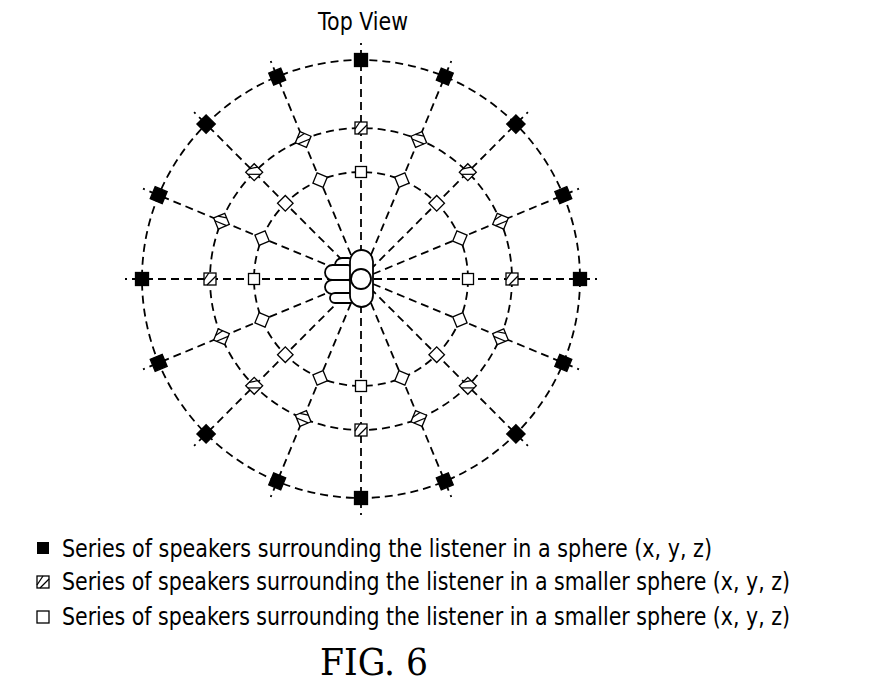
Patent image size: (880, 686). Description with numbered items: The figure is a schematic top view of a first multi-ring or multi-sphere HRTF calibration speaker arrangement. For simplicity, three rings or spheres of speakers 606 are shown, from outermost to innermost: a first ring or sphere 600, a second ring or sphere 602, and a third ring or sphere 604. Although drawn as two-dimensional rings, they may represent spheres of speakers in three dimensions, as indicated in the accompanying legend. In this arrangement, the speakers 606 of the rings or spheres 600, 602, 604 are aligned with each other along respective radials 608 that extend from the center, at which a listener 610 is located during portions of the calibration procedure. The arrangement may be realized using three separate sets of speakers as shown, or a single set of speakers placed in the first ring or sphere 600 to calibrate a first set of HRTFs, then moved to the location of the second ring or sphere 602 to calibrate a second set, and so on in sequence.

The first ring or sphere 600 is at (545, 158).
The second ring or sphere 602 is at (513, 260).
The third ring or sphere 604 is at (453, 337).
The speakers 606 is at (573, 358).
The radials 608 is at (493, 145).
The listener 610 is at (337, 300).